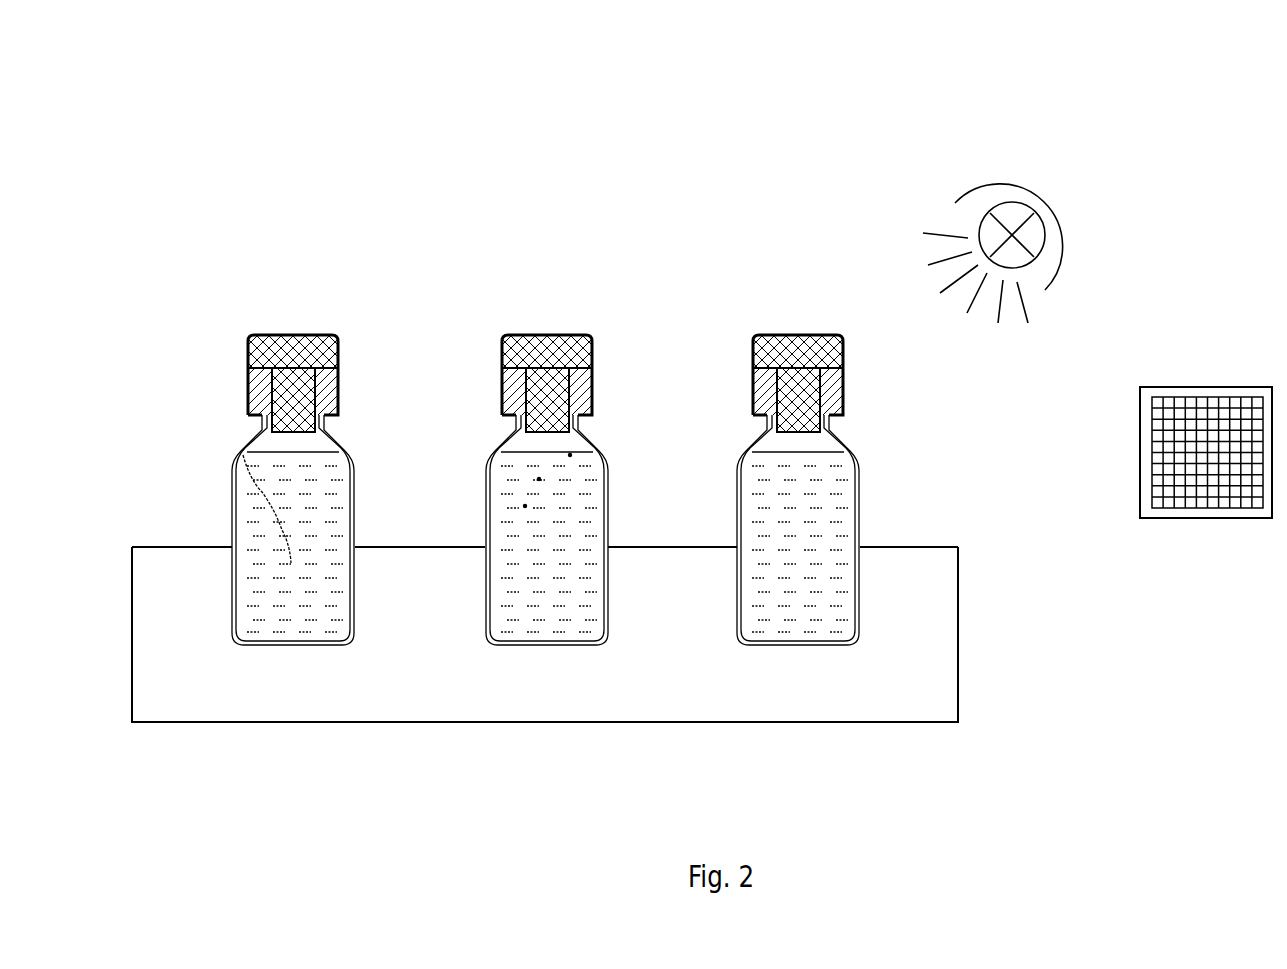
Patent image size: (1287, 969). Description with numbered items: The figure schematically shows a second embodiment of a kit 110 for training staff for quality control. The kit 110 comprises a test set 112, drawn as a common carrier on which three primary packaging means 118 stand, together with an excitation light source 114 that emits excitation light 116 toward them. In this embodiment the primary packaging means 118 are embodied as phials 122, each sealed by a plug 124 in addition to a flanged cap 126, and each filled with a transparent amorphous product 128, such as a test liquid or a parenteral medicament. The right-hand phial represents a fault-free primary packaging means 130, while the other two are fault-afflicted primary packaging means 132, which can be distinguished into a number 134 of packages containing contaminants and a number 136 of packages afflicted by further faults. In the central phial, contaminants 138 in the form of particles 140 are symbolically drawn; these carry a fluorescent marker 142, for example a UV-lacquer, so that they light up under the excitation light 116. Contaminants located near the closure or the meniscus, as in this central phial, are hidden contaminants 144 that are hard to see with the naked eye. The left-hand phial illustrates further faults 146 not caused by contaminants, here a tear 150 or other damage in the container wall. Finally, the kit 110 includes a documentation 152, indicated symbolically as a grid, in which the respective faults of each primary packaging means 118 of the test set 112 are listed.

The kit 110 is at (652, 174).
The test set 112 is at (396, 266).
The excitation light source 114 is at (1037, 214).
The excitation light 116 is at (928, 210).
The primary packaging means 118 is at (242, 506).
The phials 122 is at (243, 455).
The plug 124 is at (296, 335).
The flanged cap 126 is at (249, 350).
The amorphous product 128 is at (242, 506).
The fault-free primary packaging means 130 is at (781, 319).
The fault-afflicted primary packaging means 132 is at (405, 453).
The number of primary packaging means with contaminants 134 is at (563, 454).
The number of primary packaging means with further faults 136 is at (239, 423).
The contaminants 138 is at (593, 579).
The particles 140 is at (593, 579).
The fluorescent marker 142 is at (549, 564).
The hidden contaminants 144 is at (516, 432).
The further faults 146 is at (208, 509).
The tear 150 is at (280, 525).
The documentation 152 is at (1216, 352).